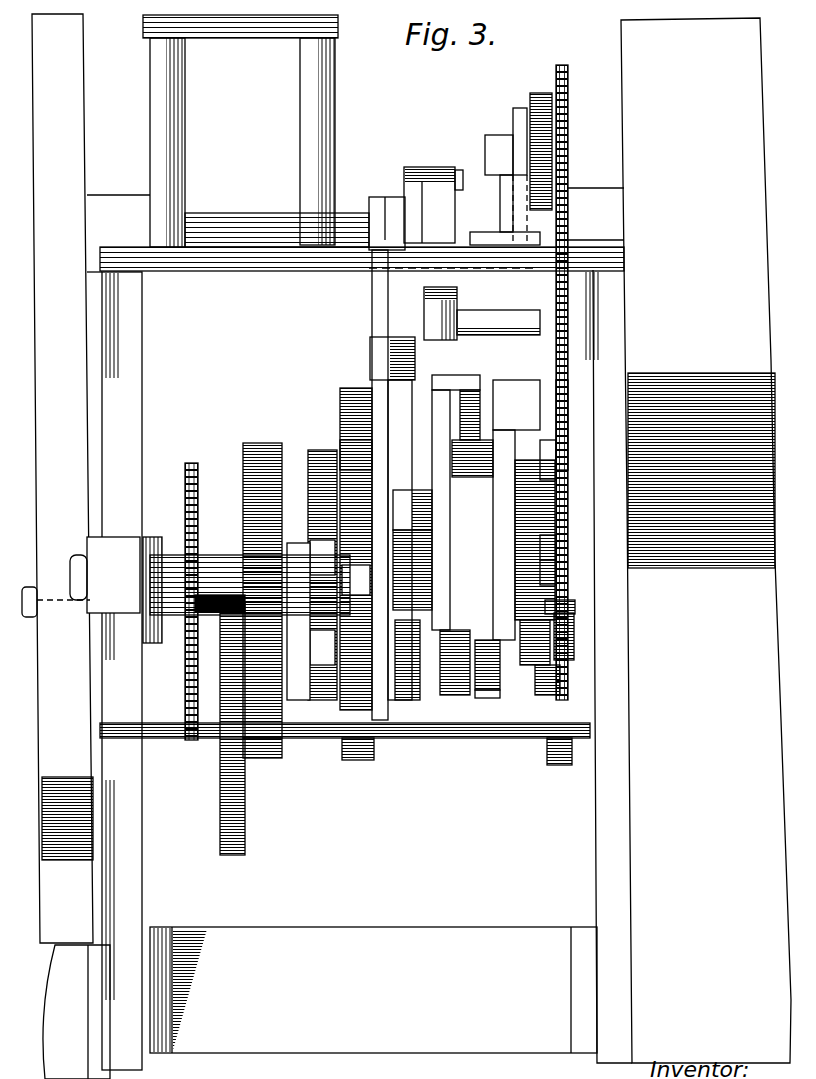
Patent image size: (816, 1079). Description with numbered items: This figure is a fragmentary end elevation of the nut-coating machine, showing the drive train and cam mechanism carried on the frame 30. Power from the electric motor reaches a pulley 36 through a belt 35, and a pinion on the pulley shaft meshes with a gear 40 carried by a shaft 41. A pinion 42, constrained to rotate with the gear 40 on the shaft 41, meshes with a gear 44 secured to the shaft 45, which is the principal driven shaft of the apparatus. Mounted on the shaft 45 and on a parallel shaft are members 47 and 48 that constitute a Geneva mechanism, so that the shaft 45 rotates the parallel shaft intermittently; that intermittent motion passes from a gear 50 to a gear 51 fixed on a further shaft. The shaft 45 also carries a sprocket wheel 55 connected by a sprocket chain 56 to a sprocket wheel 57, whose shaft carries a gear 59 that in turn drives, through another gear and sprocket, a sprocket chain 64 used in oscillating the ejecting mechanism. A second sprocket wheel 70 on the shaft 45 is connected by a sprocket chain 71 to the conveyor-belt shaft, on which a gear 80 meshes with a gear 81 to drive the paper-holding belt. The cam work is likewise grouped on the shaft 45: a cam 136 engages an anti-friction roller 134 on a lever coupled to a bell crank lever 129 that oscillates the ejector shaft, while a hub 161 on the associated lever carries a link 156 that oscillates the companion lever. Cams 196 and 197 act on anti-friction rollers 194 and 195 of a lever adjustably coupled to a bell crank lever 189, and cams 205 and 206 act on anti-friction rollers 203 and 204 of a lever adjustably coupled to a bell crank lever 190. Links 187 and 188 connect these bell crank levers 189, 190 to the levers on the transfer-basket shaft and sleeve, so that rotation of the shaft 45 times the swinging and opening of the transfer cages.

The frame 30 is at (592, 858).
The belt 35 is at (73, 470).
The pulley 36 is at (42, 848).
The gear 40 is at (246, 845).
The shaft 41 is at (190, 740).
The pinion 42 is at (283, 758).
The gear 44 is at (265, 446).
The shaft 45 is at (215, 562).
The Geneva mechanism member 47 is at (313, 545).
The Geneva mechanism member 48 is at (320, 455).
The gear 50 is at (345, 445).
The gear 51 is at (350, 392).
The sprocket wheel 55 is at (574, 640).
The sprocket chain 56 is at (572, 428).
The sprocket wheel 57 is at (570, 120).
The gear 59 is at (540, 92).
The sprocket chain 64 is at (512, 116).
The sprocket wheel 70 is at (185, 530).
The sprocket chain 71 is at (185, 480).
The gear 80 is at (575, 610).
The gear 81 is at (565, 766).
The bell crank lever 129 is at (386, 420).
The anti-friction roller 134 is at (415, 490).
The cam 136 is at (435, 695).
The link 156 is at (440, 172).
The hub 161 is at (400, 200).
The link 187 is at (372, 302).
The link 188 is at (415, 365).
The bell crank lever 189 is at (445, 420).
The bell crank lever 190 is at (505, 388).
The anti-friction roller 194 is at (470, 455).
The anti-friction roller 195 is at (460, 690).
The cam 196 is at (470, 630).
The cam 197 is at (470, 662).
The anti-friction roller 203 is at (556, 450).
The anti-friction roller 204 is at (537, 665).
The cam 205 is at (556, 552).
The cam 206 is at (556, 575).